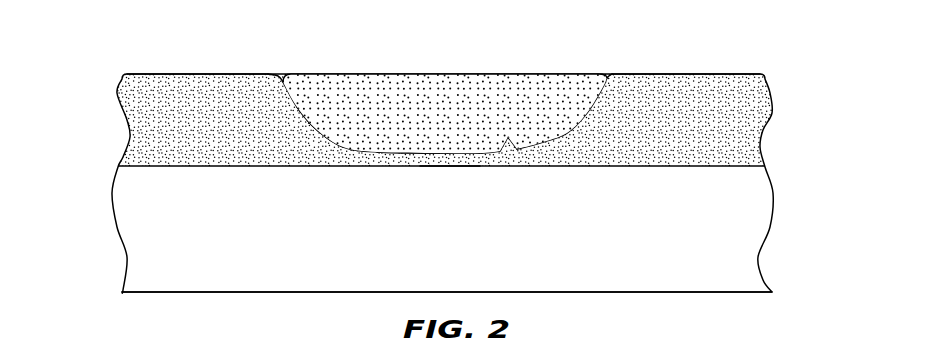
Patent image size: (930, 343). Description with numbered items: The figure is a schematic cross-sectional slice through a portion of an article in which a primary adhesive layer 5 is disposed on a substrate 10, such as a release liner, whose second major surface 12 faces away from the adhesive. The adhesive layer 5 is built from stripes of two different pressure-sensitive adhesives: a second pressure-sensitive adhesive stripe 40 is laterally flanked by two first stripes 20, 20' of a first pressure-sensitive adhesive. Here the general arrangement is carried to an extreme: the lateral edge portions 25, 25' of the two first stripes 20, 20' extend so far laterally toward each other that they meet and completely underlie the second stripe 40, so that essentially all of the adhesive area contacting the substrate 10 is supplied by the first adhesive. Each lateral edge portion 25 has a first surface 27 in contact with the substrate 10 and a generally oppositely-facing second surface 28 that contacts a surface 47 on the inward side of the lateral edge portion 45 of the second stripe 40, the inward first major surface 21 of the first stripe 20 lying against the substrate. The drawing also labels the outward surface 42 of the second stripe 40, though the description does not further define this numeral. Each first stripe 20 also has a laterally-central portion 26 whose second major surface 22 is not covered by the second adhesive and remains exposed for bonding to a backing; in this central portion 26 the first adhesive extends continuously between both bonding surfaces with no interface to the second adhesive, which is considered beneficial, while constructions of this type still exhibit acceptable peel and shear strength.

The primary adhesive layer 5 is at (103, 92).
The substrate 10 is at (99, 264).
The second major surface 12 is at (273, 293).
The first pressure-sensitive adhesive stripe 20 is at (442, 157).
The first stripe 20' is at (197, 51).
The first major surface of first adhesive stripe 21 is at (616, 168).
The second major surface 22 is at (718, 73).
The lateral edge portion 25 is at (440, 156).
The lateral edge portion 25' is at (328, 163).
The laterally-central portion 26 is at (683, 137).
The first surface 27 is at (448, 165).
The second surface 28 is at (519, 152).
The second pressure-sensitive adhesive stripe 40 is at (352, 80).
The top surface of filler 42 is at (443, 78).
The lateral edge portion 45 is at (537, 98).
The surface 47 is at (405, 153).